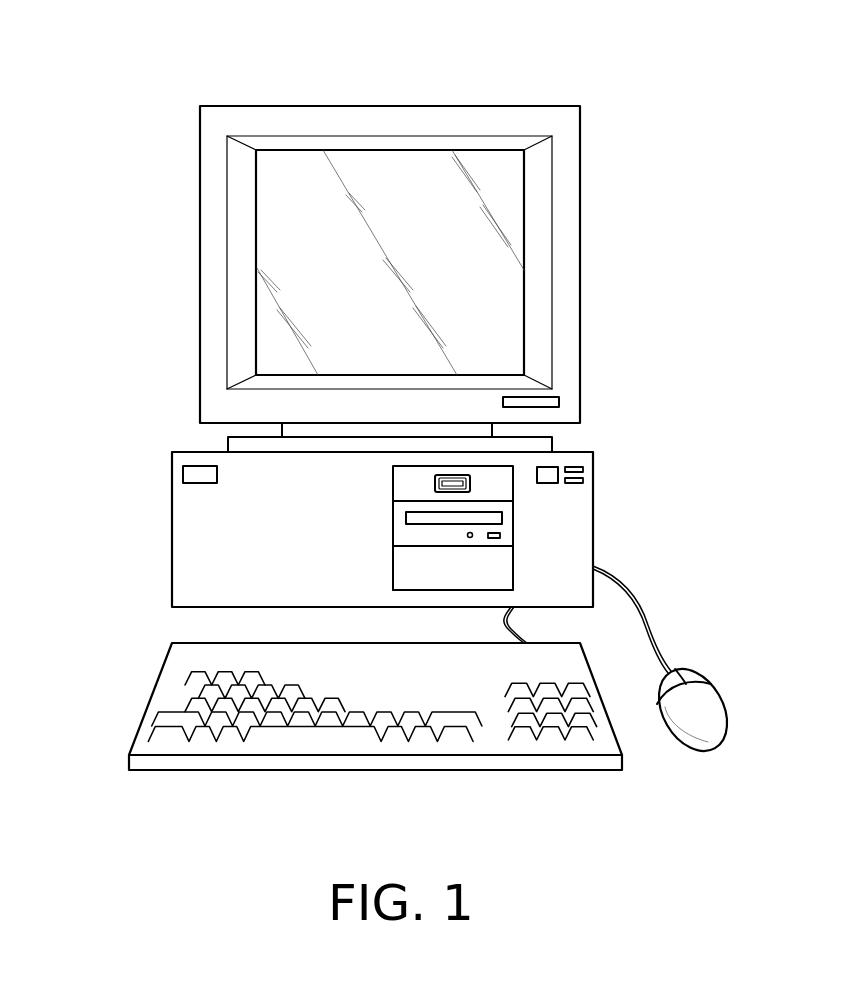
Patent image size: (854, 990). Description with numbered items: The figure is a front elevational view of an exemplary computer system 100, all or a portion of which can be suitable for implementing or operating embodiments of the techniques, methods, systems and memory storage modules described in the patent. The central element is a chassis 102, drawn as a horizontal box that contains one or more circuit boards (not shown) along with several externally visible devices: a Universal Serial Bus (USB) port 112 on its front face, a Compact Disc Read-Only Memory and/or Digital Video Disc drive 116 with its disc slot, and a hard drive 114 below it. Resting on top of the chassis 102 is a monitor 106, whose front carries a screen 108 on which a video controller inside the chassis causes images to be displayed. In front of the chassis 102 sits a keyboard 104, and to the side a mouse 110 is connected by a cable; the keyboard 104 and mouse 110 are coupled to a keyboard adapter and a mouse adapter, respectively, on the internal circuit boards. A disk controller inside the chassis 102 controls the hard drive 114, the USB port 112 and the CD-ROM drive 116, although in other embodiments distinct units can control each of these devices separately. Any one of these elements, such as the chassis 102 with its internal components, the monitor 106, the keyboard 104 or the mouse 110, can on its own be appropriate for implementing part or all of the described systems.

The computer system 100 is at (577, 74).
The chassis 102 is at (172, 532).
The keyboard 104 is at (150, 697).
The monitor 106 is at (275, 105).
The screen 108 is at (305, 268).
The mouse 110 is at (712, 700).
The Universal Serial Bus (USB) port 112 is at (470, 479).
The hard drive 114 is at (503, 567).
The CD-ROM and/or DVD drive 116 is at (503, 525).